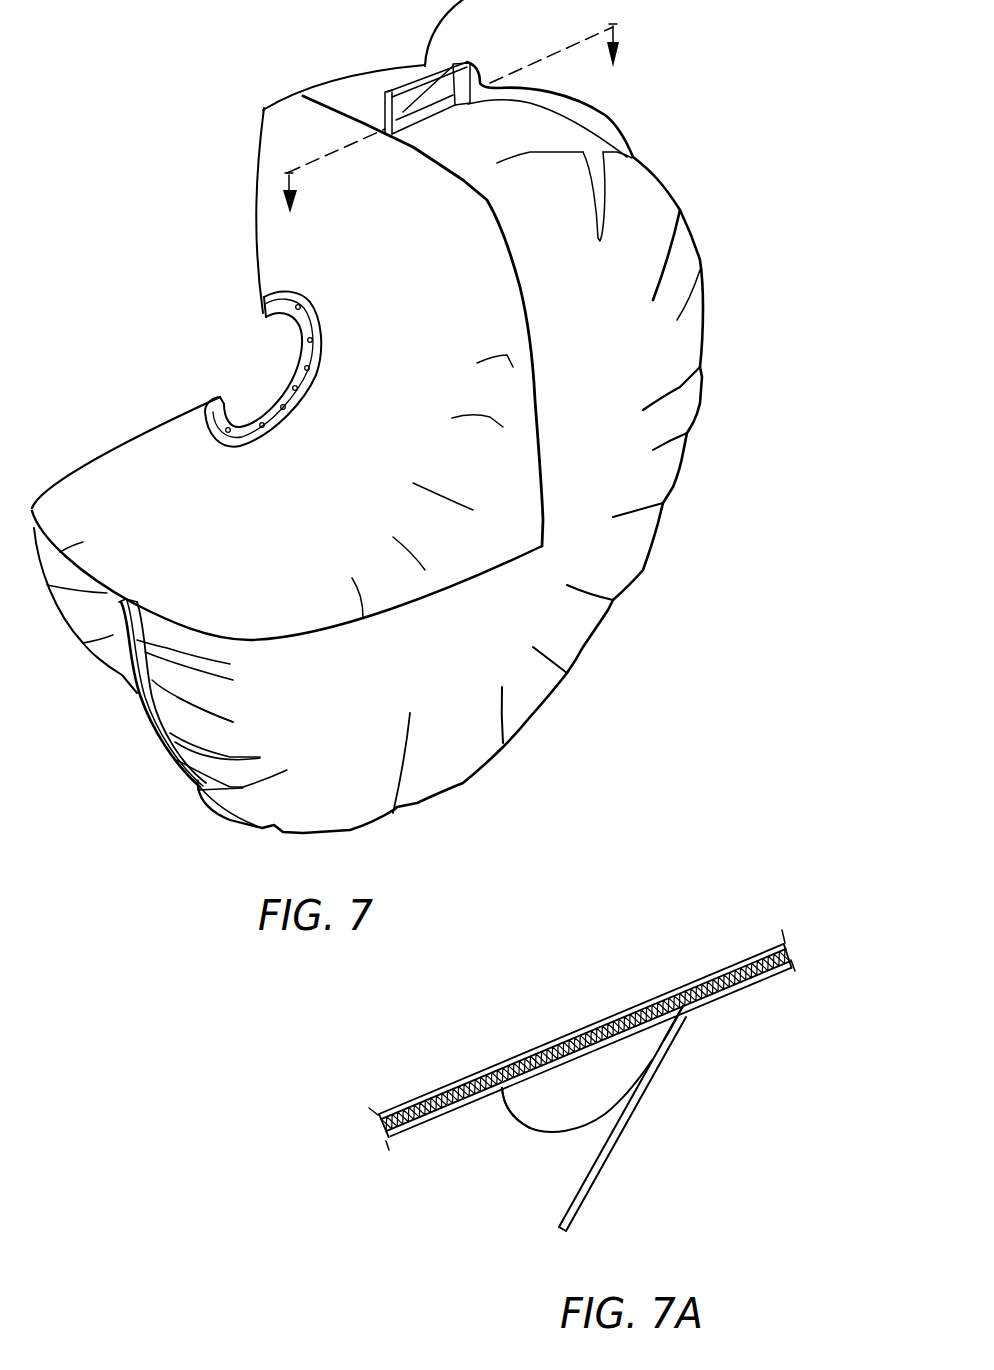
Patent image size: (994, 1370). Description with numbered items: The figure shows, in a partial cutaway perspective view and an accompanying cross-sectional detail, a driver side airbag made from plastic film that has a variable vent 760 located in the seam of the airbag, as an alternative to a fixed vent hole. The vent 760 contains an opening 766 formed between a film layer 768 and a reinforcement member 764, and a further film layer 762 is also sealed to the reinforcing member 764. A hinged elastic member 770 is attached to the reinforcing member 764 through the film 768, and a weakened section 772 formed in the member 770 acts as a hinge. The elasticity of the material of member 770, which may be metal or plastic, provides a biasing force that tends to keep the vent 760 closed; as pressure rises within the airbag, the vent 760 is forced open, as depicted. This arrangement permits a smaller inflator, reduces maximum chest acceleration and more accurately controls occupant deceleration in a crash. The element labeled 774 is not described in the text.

In FIG. 7, the vent 760 is at (587, 0).
In FIG. 7A, the film layer 762 is at (697, 975).
In FIG. 7A, the reinforcement member 764 is at (795, 951).
In FIG. 7A, the opening 766 is at (577, 1079).
In FIG. 7A, the film layer 768 is at (506, 1108).
In FIG. 7A, the hinged elastic member 770 is at (626, 1124).
In FIG. 7A, the weakened section 772 is at (686, 1019).
In FIG. 7A, the inner fabric layer 774 is at (756, 986).